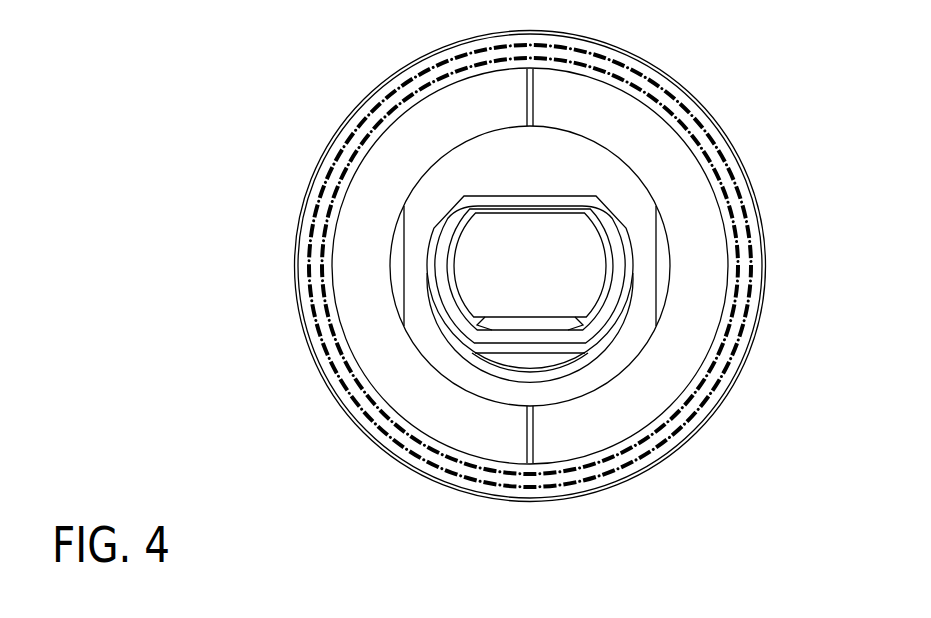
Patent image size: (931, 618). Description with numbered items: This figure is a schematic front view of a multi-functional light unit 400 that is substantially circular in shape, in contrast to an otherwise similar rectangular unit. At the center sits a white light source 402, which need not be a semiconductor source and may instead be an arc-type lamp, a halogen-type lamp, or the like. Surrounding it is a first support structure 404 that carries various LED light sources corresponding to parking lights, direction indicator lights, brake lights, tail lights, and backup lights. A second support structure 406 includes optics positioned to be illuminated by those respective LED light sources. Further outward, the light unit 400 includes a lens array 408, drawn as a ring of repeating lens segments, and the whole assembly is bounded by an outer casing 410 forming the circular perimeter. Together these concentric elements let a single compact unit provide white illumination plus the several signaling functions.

The light unit 400 is at (259, 73).
The white light source 402 is at (560, 272).
The first support structure 404 is at (692, 302).
The second support structure 406 is at (722, 215).
The lens array 408 is at (720, 158).
The outer casing 410 is at (713, 128).